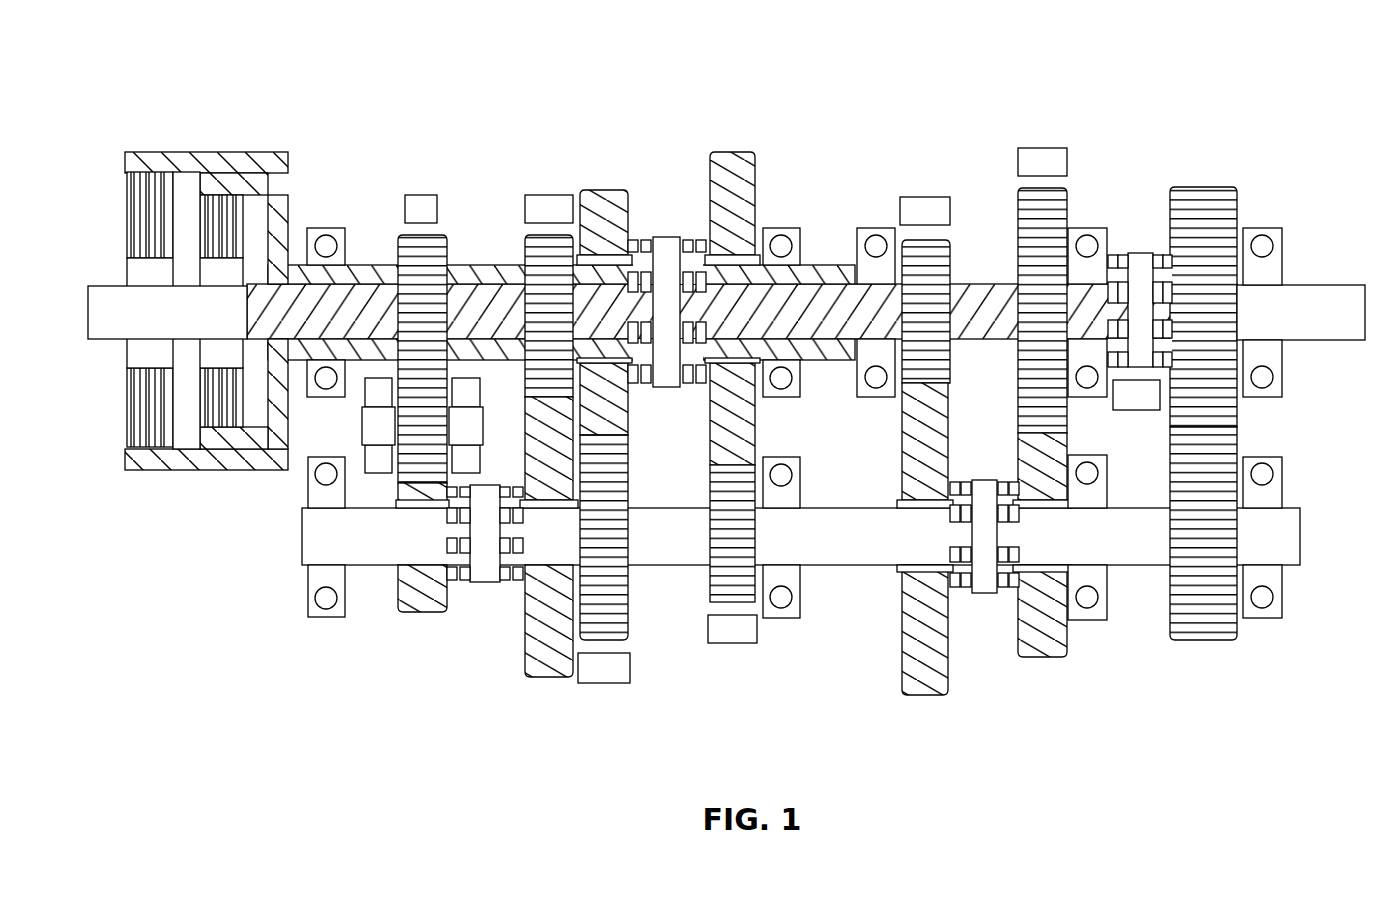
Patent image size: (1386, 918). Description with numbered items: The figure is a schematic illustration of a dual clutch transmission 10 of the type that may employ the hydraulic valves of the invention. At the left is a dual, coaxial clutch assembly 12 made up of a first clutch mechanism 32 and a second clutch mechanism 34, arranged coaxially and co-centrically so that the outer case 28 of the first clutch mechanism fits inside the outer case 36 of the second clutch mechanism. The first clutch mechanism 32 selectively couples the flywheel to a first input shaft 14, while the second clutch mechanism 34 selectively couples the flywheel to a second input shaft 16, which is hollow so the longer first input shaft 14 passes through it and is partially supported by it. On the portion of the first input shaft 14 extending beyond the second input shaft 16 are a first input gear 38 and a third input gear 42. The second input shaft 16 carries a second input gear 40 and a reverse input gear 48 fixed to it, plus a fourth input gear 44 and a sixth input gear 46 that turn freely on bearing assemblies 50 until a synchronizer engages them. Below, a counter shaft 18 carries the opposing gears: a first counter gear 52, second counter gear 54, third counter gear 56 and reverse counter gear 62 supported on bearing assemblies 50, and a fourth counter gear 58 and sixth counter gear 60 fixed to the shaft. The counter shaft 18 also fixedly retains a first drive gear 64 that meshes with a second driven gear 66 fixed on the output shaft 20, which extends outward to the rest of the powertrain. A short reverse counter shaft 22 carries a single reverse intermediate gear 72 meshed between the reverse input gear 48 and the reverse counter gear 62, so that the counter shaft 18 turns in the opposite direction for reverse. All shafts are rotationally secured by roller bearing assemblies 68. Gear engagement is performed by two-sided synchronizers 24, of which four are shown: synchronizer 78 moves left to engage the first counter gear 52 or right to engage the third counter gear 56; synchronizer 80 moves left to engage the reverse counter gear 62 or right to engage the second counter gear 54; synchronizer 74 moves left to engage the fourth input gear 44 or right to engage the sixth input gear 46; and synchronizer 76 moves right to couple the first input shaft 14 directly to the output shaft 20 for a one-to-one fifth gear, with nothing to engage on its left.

The dual clutch transmission 10 is at (548, 140).
The dual, coaxial clutch assembly 12 is at (229, 253).
The first input shaft 14 is at (987, 297).
The second input shaft 16 is at (357, 275).
The counter shaft 18 is at (313, 540).
The output shaft 20 is at (1340, 300).
The reverse counter shaft 22 is at (351, 443).
The synchronizers 24 is at (675, 238).
The outer case of the first clutch mechanism 28 is at (258, 222).
The first clutch mechanism 32 is at (235, 205).
The second clutch mechanism 34 is at (156, 185).
The outer case of the second clutch mechanism 36 is at (287, 172).
The first input gear 38 is at (948, 255).
The second input gear 40 is at (525, 252).
The third input gear 42 is at (1060, 205).
The fourth input gear 44 is at (603, 190).
The sixth input gear 46 is at (755, 175).
The reverse input gear 48 is at (447, 253).
The bearing assemblies 50 is at (398, 567).
The first counter gear 52 is at (913, 672).
The second counter gear 54 is at (548, 670).
The third counter gear 56 is at (1040, 645).
The fourth counter gear 58 is at (620, 620).
The sixth counter gear 60 is at (712, 585).
The reverse counter gear 62 is at (410, 603).
The first drive gear 64 is at (1165, 610).
The second driven gear 66 is at (1228, 205).
The bearing assembly 68 is at (790, 245).
The reverse intermediate gear 72 is at (405, 424).
The synchronizer 74 is at (667, 255).
The synchronizer 76 is at (1140, 262).
The synchronizer 78 is at (985, 585).
The synchronizer 80 is at (483, 575).